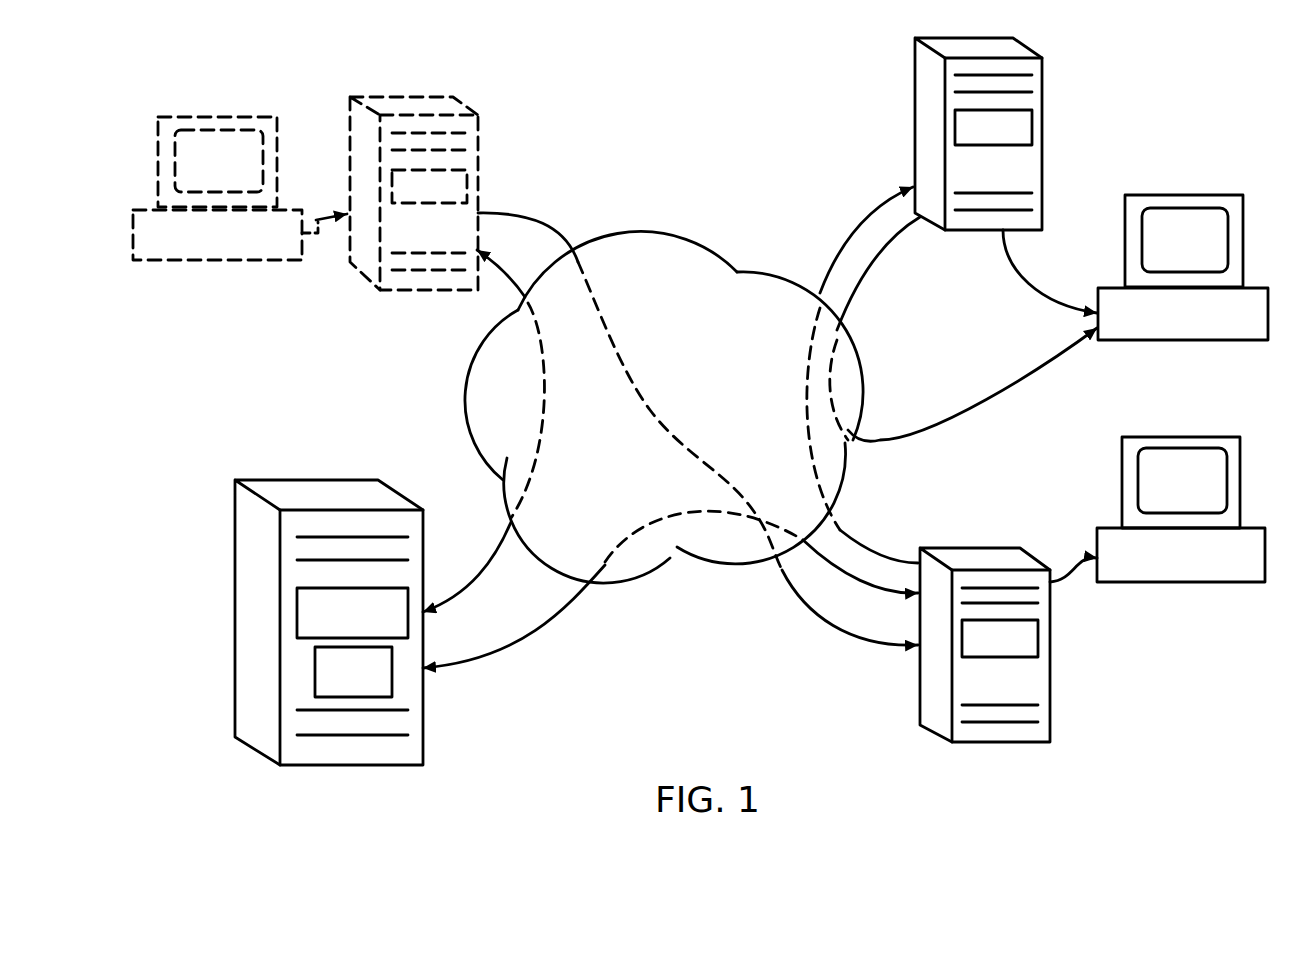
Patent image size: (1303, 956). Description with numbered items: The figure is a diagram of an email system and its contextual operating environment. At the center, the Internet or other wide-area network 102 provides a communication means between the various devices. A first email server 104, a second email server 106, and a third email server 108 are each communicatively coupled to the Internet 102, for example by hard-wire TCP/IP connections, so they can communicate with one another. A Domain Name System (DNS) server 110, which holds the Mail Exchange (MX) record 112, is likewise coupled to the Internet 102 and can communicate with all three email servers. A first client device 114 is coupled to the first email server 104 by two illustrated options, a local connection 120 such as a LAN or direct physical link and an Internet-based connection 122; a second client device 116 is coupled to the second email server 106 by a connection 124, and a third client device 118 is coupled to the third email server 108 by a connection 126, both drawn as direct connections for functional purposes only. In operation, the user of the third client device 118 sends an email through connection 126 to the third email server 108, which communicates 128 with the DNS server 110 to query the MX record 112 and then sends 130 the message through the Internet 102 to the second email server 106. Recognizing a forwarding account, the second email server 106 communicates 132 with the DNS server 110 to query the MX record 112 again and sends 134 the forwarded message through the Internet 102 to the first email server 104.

The Internet or other wide-area network 102 is at (490, 400).
The first email server 104 is at (928, 92).
The second email server 106 is at (935, 708).
The third email server 108 is at (365, 262).
The Domain Name System (DNS) server 110 is at (250, 545).
The Mail Exchange (MX) record 112 is at (310, 665).
The first client device 114 is at (1185, 220).
The second client device 116 is at (1190, 562).
The third client device 118 is at (212, 240).
The local connection 120 is at (1020, 278).
The Internet-based connection 122 is at (980, 410).
The connection 124 is at (1062, 585).
The connection 126 is at (320, 215).
The communication with DNS server 128 is at (480, 568).
The sending of original email message 130 is at (547, 221).
The communication with DNS server 132 is at (830, 630).
The sending of forwarded email message 134 is at (865, 220).